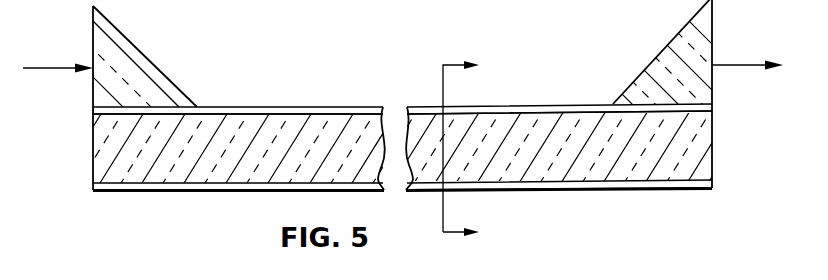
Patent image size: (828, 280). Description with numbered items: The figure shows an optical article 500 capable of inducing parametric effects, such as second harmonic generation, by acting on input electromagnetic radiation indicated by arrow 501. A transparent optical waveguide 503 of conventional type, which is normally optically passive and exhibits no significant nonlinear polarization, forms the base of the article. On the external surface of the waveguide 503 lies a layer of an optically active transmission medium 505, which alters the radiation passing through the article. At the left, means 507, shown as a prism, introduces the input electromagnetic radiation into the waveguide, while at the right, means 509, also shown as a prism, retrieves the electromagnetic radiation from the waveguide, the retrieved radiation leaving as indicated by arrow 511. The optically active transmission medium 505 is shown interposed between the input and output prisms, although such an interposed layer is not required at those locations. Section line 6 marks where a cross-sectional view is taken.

The optical article 500 is at (113, 216).
The input electromagnetic radiation 501 is at (47, 67).
The transparent optical waveguide 503 is at (217, 179).
The layer of optically active transmission medium 505 is at (278, 97).
The means for introducing input electromagnetic radiation 507 is at (147, 59).
The means for retrieving electromagnetic radiation 509 is at (688, 25).
The output light beam 511 is at (743, 65).
The section line 6- 6 is at (468, 150).